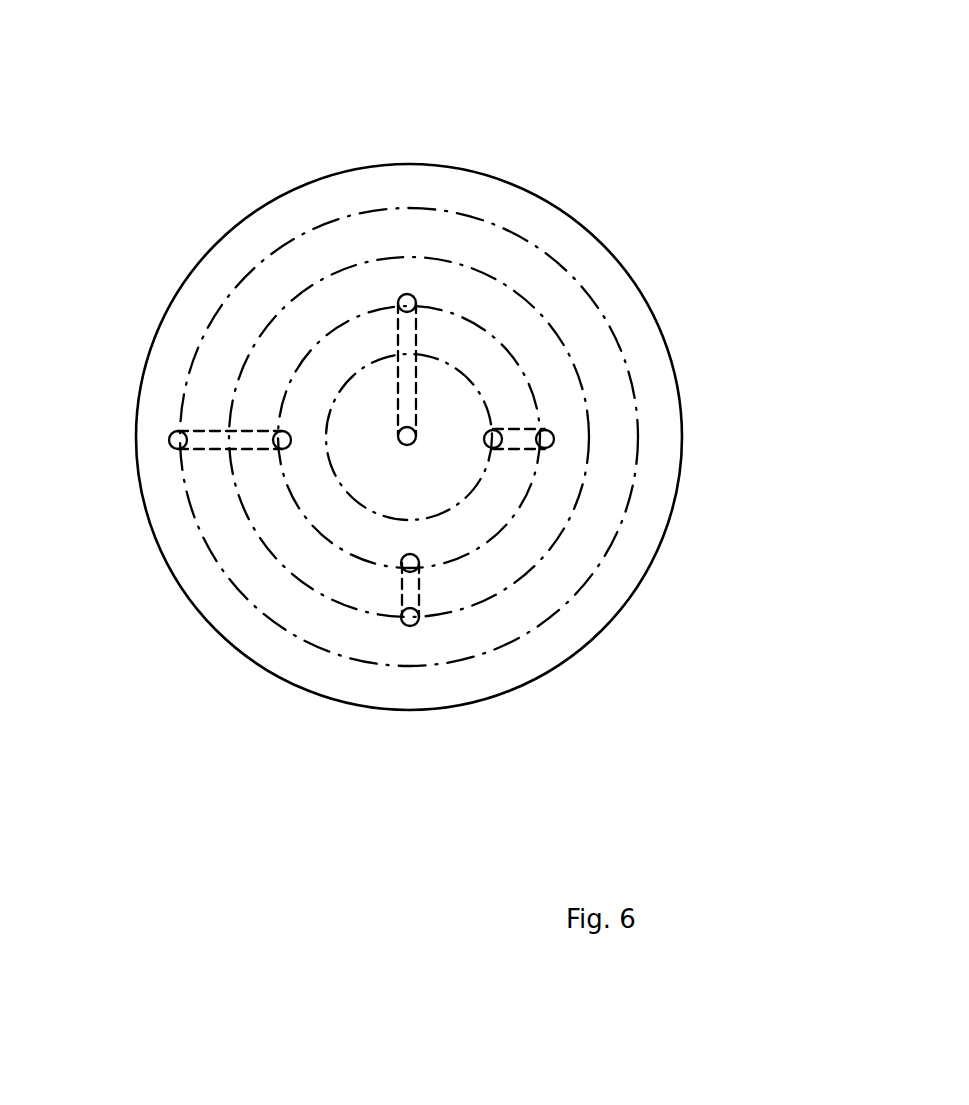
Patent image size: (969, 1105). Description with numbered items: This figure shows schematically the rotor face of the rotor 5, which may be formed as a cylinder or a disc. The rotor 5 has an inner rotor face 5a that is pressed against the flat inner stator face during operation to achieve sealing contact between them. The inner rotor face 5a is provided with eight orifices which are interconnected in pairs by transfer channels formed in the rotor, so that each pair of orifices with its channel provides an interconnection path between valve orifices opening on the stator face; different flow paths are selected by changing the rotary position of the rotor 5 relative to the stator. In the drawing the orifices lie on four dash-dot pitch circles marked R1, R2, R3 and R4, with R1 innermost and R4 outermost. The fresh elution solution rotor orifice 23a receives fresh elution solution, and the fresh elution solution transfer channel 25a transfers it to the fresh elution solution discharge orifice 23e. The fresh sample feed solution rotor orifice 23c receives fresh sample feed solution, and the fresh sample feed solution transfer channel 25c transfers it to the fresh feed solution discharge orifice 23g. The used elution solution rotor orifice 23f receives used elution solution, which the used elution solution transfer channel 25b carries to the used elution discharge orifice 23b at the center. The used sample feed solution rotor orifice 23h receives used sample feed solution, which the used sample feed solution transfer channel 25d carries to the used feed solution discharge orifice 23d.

The rotor 5 is at (522, 176).
The inner rotor face 5a is at (280, 195).
The fresh elution solution rotor orifice 23a is at (172, 444).
The used elution discharge orifice 23b is at (420, 433).
The fresh sample feed solution rotor orifice 23c is at (492, 428).
The used feed solution discharge orifice 23d is at (403, 622).
The fresh elution solution discharge orifice 23e is at (282, 428).
The used elution solution rotor orifice 23f is at (408, 303).
The fresh feed solution discharge orifice 23g is at (549, 430).
The used sample feed solution rotor orifice 23h is at (418, 564).
The fresh elution solution transfer channel 25a is at (220, 452).
The used elution solution transfer channel 25b is at (443, 357).
The fresh sample feed solution transfer channel 25c is at (520, 427).
The used sample feed solution transfer channel 25d is at (403, 570).
The radius R1 pitch circle R1 is at (488, 472).
The radius R2 pitch circle R2 is at (522, 507).
The radius R3 pitch circle R3 is at (497, 593).
The radius R4 pitch circle R4 is at (500, 643).